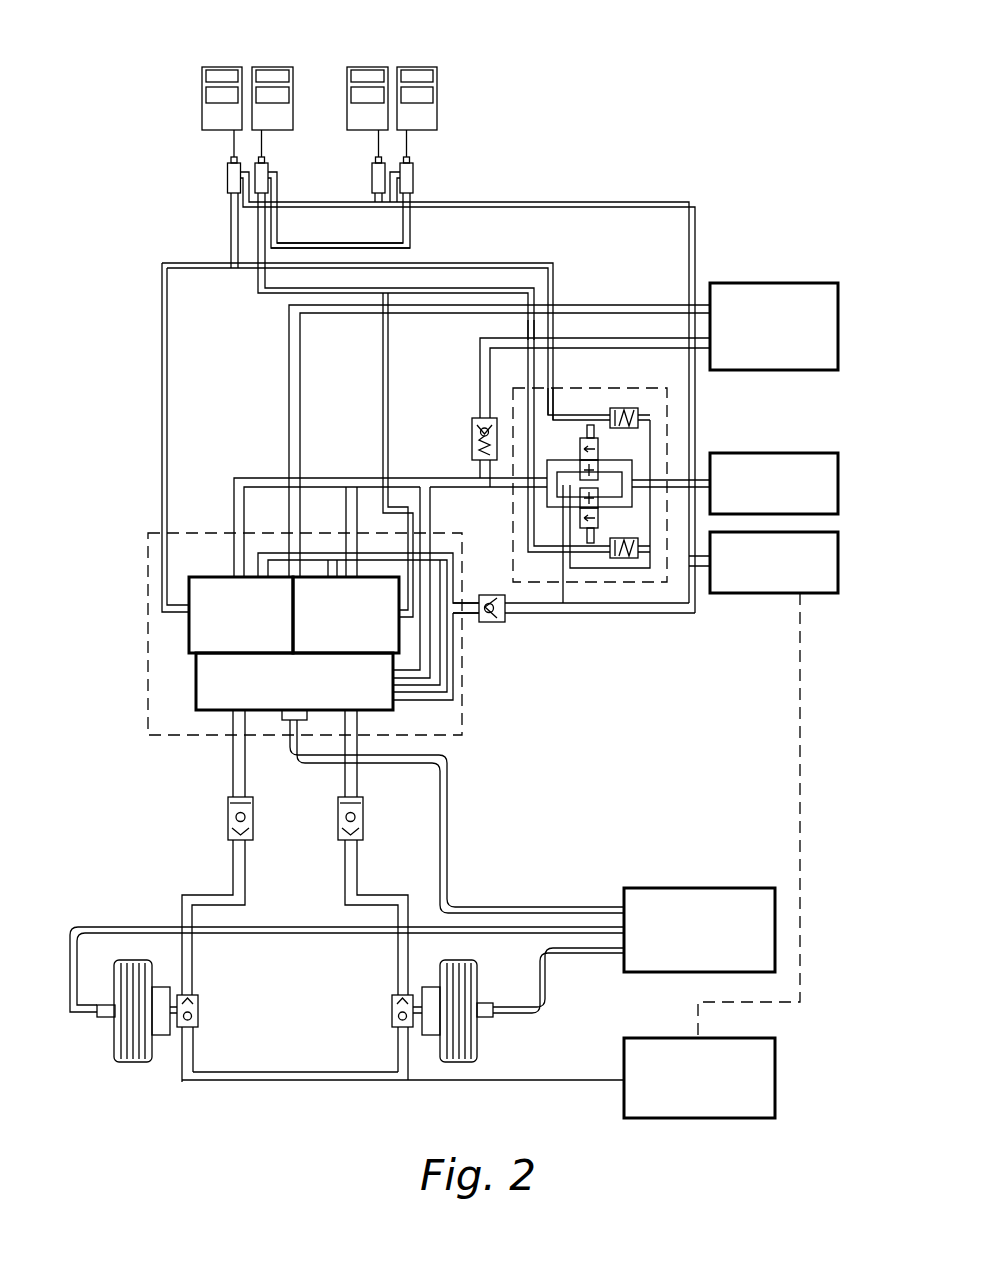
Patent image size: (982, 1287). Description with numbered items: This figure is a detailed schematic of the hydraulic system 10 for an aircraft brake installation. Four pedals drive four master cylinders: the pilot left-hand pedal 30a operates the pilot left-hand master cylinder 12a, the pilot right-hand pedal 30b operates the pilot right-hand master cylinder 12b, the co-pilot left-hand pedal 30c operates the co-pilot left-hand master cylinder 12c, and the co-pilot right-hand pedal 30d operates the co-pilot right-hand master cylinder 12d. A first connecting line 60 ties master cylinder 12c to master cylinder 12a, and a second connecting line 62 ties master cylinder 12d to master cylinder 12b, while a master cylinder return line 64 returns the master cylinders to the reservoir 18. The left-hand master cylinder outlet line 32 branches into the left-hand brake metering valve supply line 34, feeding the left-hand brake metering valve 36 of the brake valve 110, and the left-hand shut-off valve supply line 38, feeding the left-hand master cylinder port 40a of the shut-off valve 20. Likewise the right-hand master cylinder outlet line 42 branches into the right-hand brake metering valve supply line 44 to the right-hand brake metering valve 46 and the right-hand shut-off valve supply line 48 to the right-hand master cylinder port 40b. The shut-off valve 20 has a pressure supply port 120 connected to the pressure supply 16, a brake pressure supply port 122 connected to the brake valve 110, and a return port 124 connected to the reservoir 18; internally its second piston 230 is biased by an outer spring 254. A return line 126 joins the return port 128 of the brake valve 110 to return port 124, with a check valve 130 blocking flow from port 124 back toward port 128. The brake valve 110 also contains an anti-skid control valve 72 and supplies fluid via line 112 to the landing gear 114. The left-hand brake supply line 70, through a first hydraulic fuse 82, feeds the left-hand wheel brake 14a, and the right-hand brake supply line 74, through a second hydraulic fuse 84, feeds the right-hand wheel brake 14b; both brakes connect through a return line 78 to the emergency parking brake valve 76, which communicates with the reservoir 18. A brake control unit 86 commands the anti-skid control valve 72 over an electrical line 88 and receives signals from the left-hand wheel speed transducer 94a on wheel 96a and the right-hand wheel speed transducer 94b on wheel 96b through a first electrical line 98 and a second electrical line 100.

The hydraulic system 10 is at (705, 130).
The pilot left-hand master cylinder 12a is at (228, 178).
The pilot right-hand master cylinder 12b is at (270, 172).
The co-pilot left-hand master cylinder 12c is at (372, 178).
The co-pilot right-hand master cylinder 12d is at (414, 175).
The left-hand wheel brake 14a is at (160, 1035).
The right-hand wheel brake 14b is at (433, 1035).
The pressure supply 16 is at (783, 453).
The reservoir 18 is at (783, 594).
The shut-off valve 20 is at (628, 388).
The pilot left-hand pedal 30a is at (215, 66).
The pilot right-hand pedal 30b is at (282, 66).
The co-pilot left-hand pedal 30c is at (360, 66).
The co-pilot right-hand pedal 30d is at (420, 66).
The left-hand master cylinder outlet line 32 is at (230, 232).
The left-hand brake metering valve supply line 34 is at (160, 383).
The left-hand brake metering valve 36 is at (188, 632).
The left-hand shut-off valve supply line 38 is at (560, 268).
The left-hand master cylinder port 40a is at (553, 392).
The right-hand master cylinder port 40b is at (528, 390).
The right-hand master cylinder outlet line 42 is at (256, 290).
The right-hand brake metering valve supply line 44 is at (388, 387).
The right-hand brake metering valve 46 is at (460, 615).
The right-hand shut-off valve supply line 48 is at (526, 327).
The first connecting line 60 is at (322, 207).
The second connecting line 62 is at (415, 245).
The master cylinder return line 64 is at (588, 205).
The left-hand brake supply line 70 is at (232, 778).
The anti-skid control valve 72 is at (194, 688).
The right-hand brake supply line 74 is at (345, 872).
The emergency parking brake valve 76 is at (720, 1118).
The return line 78 is at (537, 1080).
The first hydraulic fuse 82 is at (228, 820).
The second hydraulic fuse 84 is at (363, 818).
The brake control unit 86 is at (715, 888).
The electrical line 88 is at (447, 830).
The left-hand wheel speed transducer 94a is at (103, 1018).
The right-hand wheel speed transducer 94b is at (487, 1003).
The left wheel 96a is at (130, 1062).
The right wheel 96b is at (470, 1040).
The first electrical line 98 is at (330, 933).
The second electrical line 100 is at (582, 950).
The brake valve 110 is at (141, 593).
The line 112 is at (300, 405).
The landing gear 114 is at (766, 283).
The pressure supply port 120 is at (688, 450).
The brake pressure supply port 122 is at (535, 486).
The return port 124 is at (572, 582).
The return line 126 is at (578, 615).
The return port 128 is at (462, 620).
The check valve 130 is at (485, 594).
The second piston 230 is at (615, 428).
The outer spring 254 is at (612, 440).